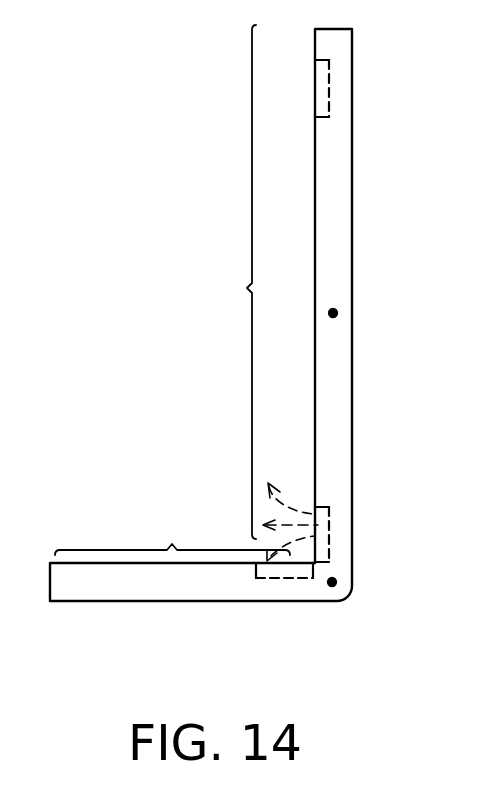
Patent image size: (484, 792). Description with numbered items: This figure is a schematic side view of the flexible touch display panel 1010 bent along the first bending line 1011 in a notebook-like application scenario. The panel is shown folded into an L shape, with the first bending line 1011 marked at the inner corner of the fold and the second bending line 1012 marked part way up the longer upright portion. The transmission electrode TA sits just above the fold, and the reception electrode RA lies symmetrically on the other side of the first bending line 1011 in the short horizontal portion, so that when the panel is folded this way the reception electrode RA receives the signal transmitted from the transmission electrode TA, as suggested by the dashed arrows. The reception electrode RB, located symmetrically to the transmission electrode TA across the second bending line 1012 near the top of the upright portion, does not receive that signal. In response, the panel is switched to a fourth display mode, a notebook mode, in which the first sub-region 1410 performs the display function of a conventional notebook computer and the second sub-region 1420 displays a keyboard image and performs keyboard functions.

The flexible touch display panel 1010 is at (353, 177).
The first bending line 1011 is at (332, 588).
The second bending line 1012 is at (338, 315).
The first sub-region 1410 is at (219, 282).
The second sub-region 1420 is at (172, 529).
The reception electrode RB is at (329, 67).
The transmission electrode TA is at (330, 524).
The reception electrode RA is at (267, 586).